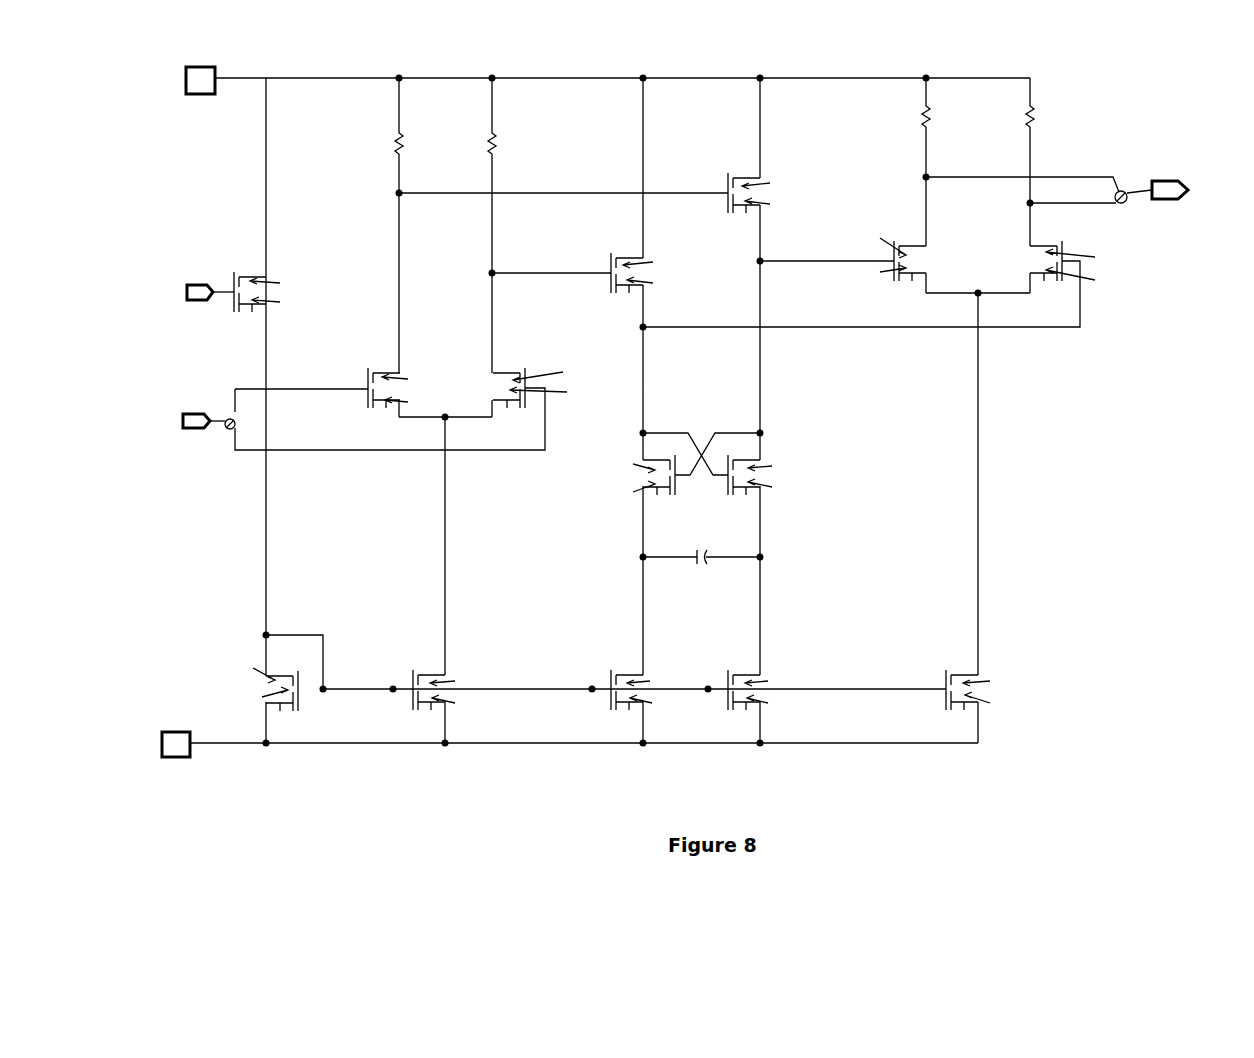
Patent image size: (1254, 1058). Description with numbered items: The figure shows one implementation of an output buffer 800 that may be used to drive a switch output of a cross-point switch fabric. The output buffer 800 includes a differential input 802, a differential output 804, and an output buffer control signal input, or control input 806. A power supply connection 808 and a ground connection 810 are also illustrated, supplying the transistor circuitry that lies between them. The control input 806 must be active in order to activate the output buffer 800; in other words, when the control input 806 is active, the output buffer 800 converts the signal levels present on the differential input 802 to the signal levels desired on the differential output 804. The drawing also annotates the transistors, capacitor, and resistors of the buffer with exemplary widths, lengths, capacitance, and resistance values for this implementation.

The output buffer 800 is at (1112, 98).
The differential input 802 is at (219, 410).
The differential output 804 is at (1136, 185).
The output buffer control signal input 806 is at (184, 281).
The power supply connection 808 is at (236, 76).
The ground connection 810 is at (190, 732).